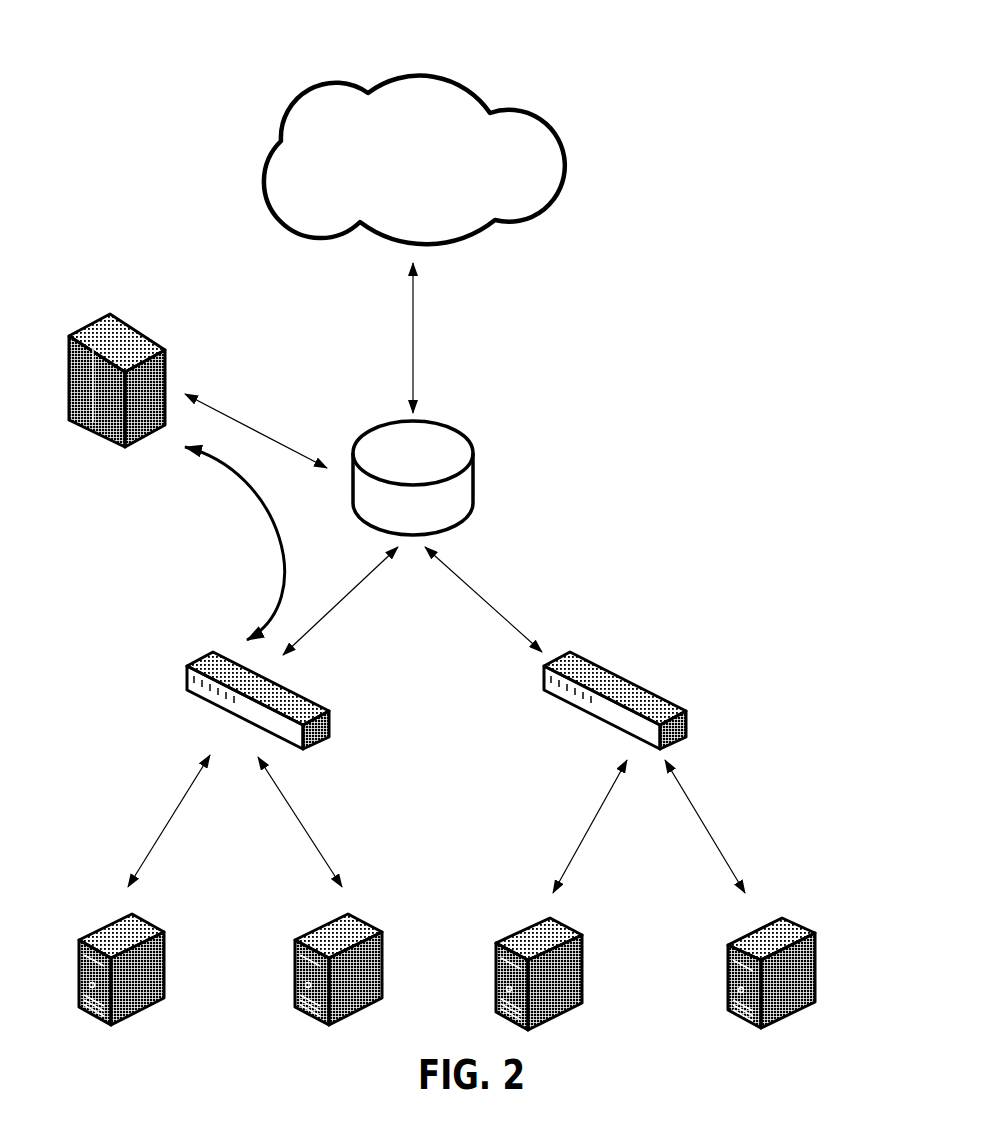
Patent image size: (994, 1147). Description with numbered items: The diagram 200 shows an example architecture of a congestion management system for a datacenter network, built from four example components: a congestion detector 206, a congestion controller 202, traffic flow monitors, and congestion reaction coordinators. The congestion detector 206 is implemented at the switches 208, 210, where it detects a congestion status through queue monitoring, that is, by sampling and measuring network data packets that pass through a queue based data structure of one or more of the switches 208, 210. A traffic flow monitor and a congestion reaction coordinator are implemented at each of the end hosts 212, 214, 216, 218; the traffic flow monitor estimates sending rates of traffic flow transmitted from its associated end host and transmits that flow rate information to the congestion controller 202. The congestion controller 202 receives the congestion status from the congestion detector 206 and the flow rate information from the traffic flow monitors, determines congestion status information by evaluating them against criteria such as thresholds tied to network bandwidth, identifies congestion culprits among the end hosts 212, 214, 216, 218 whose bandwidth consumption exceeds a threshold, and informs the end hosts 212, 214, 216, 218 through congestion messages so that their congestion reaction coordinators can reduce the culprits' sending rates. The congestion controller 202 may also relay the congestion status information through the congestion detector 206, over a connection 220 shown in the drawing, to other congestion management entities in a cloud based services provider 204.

The diagram 200 is at (706, 60).
The congestion controller 202 is at (144, 320).
The cloud based services provider 204 is at (513, 113).
The congestion detector 206 is at (462, 434).
The switch 208 is at (333, 710).
The switch 210 is at (691, 710).
The end host 212 is at (167, 929).
The end host 214 is at (385, 929).
The end host 216 is at (586, 933).
The end host 218 is at (746, 931).
The connection 220 is at (256, 545).